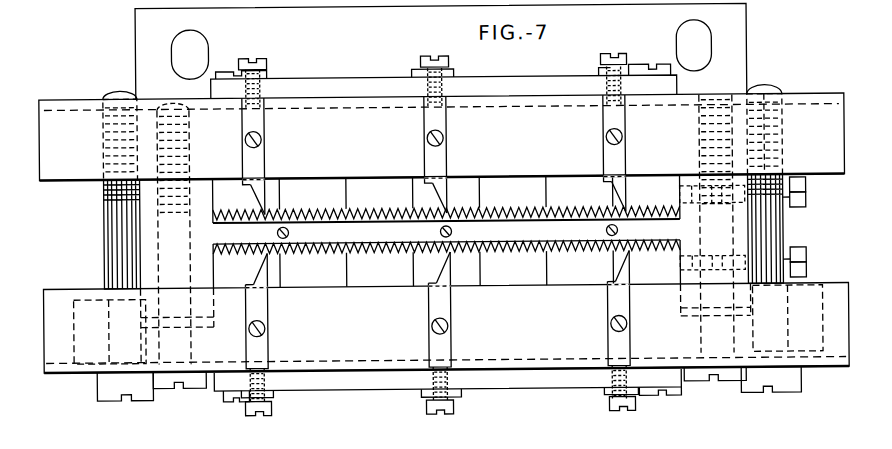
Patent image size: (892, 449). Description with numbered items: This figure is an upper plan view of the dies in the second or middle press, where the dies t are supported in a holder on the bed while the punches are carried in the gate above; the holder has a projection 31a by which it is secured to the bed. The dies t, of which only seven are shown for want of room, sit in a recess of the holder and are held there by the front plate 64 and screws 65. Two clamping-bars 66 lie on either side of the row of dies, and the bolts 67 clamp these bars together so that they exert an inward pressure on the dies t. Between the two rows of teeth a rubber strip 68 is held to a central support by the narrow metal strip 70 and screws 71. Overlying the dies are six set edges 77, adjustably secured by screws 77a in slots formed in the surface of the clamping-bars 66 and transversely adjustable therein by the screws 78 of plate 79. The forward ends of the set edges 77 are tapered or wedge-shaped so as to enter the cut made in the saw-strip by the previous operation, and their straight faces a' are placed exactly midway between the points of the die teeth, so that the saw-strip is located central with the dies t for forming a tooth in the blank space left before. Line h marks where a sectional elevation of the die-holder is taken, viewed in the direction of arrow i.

The projection 31a is at (441, 51).
The plate 79 is at (528, 77).
The clamping-bars 66 is at (444, 233).
The front plate 64 is at (542, 362).
The dies t is at (434, 231).
The rubber strip 68 is at (213, 245).
The narrow metal strip 70 is at (446, 231).
The screws 71 is at (289, 232).
The set edges 77 is at (436, 232).
The straight faces a' is at (450, 221).
The screws 77a is at (263, 139).
The screws 78 is at (253, 53).
The bolts 67 is at (449, 383).
The screws 65 is at (182, 387).
The line h is at (349, 372).
The arrow i is at (85, 264).